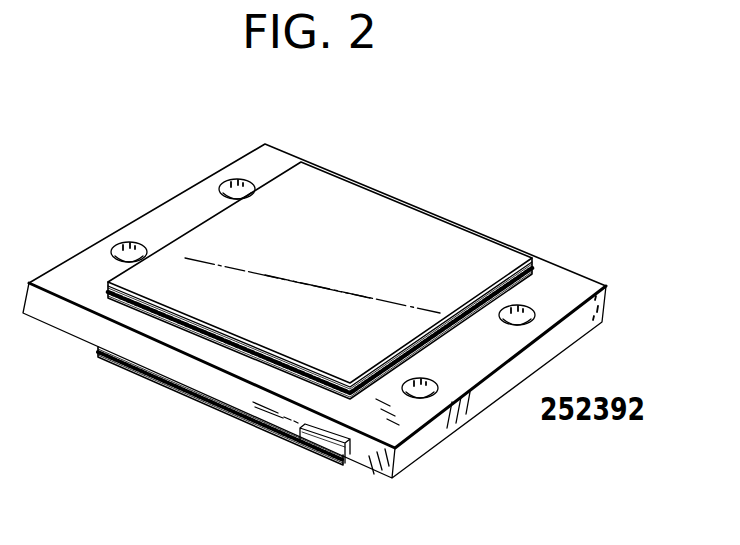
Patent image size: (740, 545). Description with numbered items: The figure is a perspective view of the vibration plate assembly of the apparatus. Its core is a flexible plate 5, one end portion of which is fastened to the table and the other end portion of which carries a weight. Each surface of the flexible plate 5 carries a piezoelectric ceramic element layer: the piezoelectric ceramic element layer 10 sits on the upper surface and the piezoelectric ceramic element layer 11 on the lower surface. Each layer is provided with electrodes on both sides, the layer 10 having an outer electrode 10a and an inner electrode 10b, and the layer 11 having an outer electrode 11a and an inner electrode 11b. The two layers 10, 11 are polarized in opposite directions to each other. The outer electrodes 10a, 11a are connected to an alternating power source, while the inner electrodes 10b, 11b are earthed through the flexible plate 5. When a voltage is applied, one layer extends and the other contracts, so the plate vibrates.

The flexible plate 5 is at (502, 380).
The piezoelectric ceramic element layer 10 is at (363, 273).
The outer electrode 10a is at (488, 265).
The inner electrode 10b is at (528, 280).
The piezoelectric ceramic element layer 11 is at (224, 428).
The outer electrode 11a is at (257, 428).
The inner electrode 11b is at (307, 452).